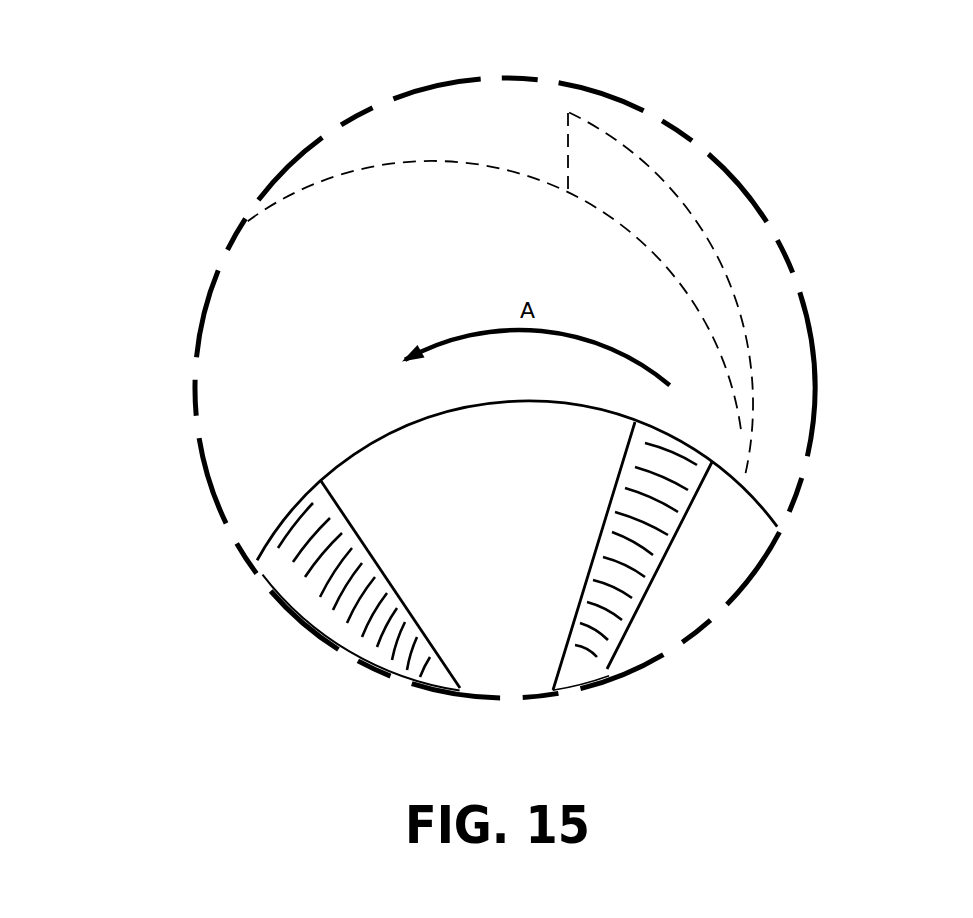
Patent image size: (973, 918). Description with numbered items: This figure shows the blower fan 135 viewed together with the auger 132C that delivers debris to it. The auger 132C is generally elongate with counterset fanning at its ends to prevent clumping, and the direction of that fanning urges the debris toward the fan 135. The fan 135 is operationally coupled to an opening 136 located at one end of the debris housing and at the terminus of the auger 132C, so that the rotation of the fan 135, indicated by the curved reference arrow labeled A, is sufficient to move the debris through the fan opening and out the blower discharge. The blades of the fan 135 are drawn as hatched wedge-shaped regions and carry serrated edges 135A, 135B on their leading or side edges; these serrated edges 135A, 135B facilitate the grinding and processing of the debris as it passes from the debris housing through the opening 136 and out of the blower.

The auger 132C is at (640, 187).
The fan 135 is at (645, 592).
The serrated edge 135A is at (693, 440).
The serrated edge 135B is at (272, 532).
The opening 136 is at (522, 665).